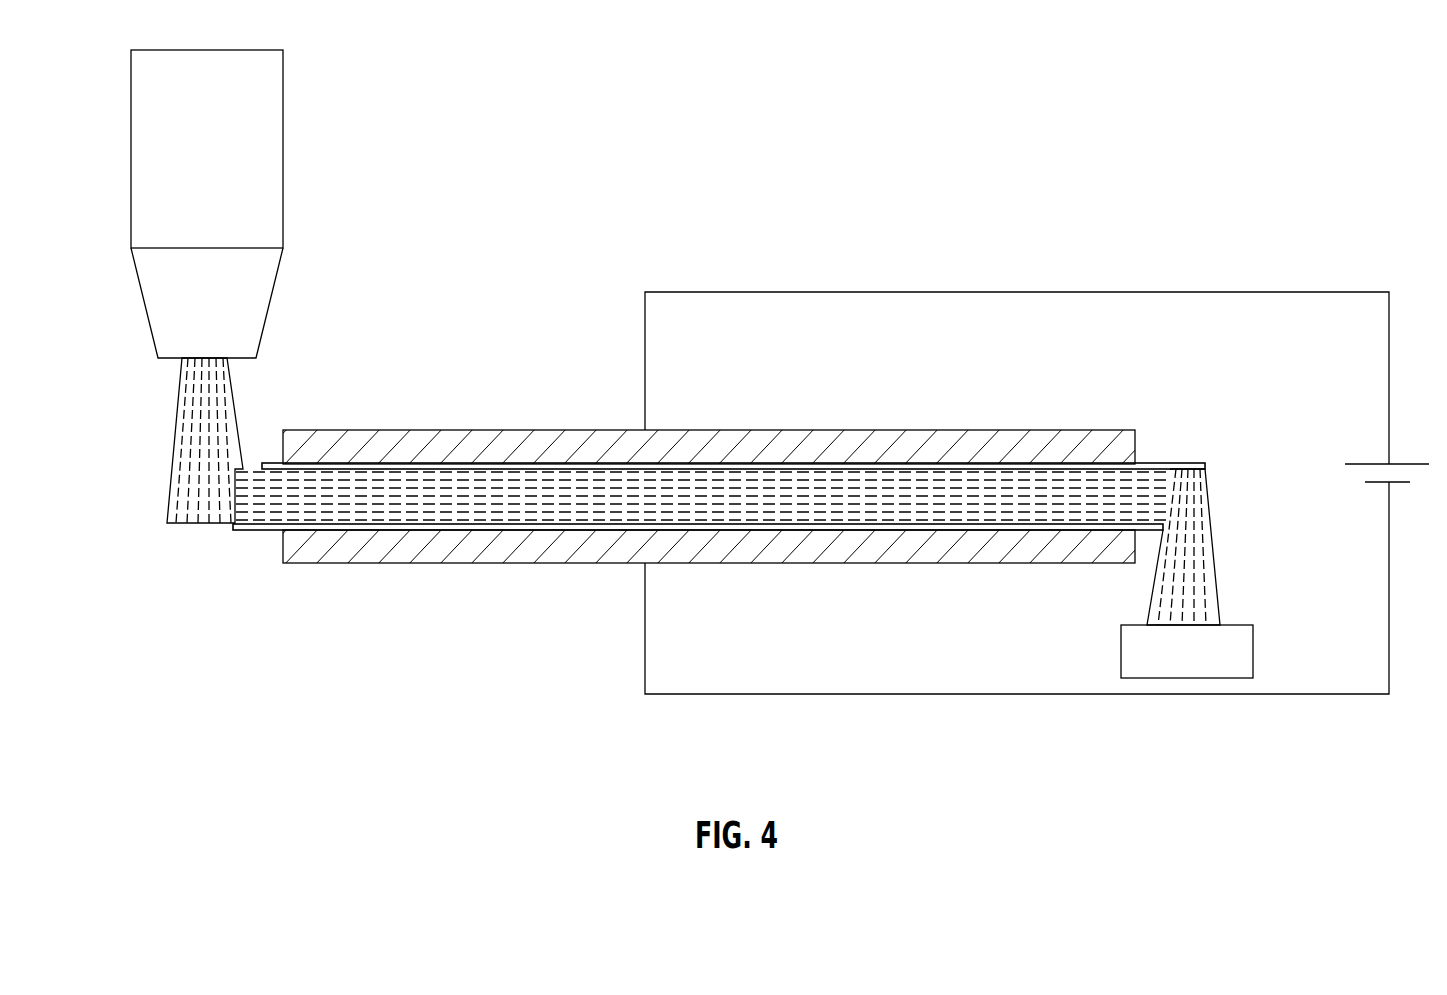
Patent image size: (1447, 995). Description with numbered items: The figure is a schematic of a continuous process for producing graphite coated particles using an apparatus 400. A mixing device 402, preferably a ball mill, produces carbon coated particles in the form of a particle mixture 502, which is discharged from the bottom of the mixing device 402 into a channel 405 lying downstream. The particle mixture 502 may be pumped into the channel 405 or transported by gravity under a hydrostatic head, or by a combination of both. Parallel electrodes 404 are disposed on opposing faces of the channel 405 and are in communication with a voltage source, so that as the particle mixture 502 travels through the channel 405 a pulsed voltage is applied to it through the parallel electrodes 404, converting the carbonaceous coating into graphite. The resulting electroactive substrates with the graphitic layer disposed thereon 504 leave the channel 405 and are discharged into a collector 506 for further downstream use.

The apparatus 400 is at (986, 90).
The mixing device 402 is at (263, 149).
The parallel electrodes 404 is at (990, 430).
The channel 405 is at (270, 463).
The particle mixture 502 is at (190, 433).
The electroactive substrates with the graphitic layer disposed thereon 504 is at (1208, 593).
The collector 506 is at (1255, 652).